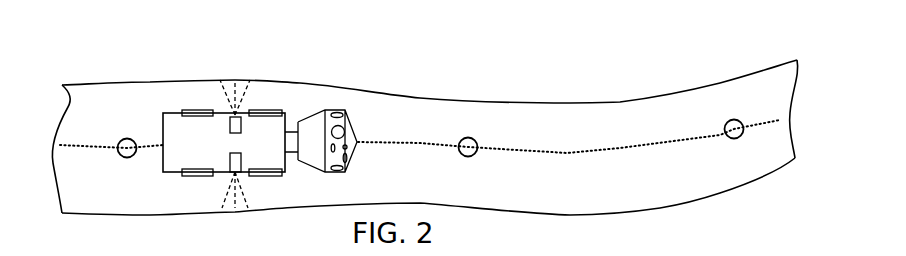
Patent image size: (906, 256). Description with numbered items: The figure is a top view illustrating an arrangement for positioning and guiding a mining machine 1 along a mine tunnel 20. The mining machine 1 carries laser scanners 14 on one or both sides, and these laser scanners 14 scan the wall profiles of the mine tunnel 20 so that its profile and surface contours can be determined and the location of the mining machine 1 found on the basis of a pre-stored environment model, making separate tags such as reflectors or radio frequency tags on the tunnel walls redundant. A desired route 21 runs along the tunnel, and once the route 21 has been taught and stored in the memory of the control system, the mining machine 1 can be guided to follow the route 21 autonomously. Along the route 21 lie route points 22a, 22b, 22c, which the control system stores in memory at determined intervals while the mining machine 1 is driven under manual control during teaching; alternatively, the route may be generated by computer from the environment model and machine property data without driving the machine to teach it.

The mining machine 1 is at (177, 128).
The laser scanner 14 is at (233, 118).
The mine tunnel 20 is at (112, 82).
The route 21 is at (67, 145).
The route point 22a is at (120, 158).
The route point 22b is at (459, 157).
The route point 22c is at (725, 137).